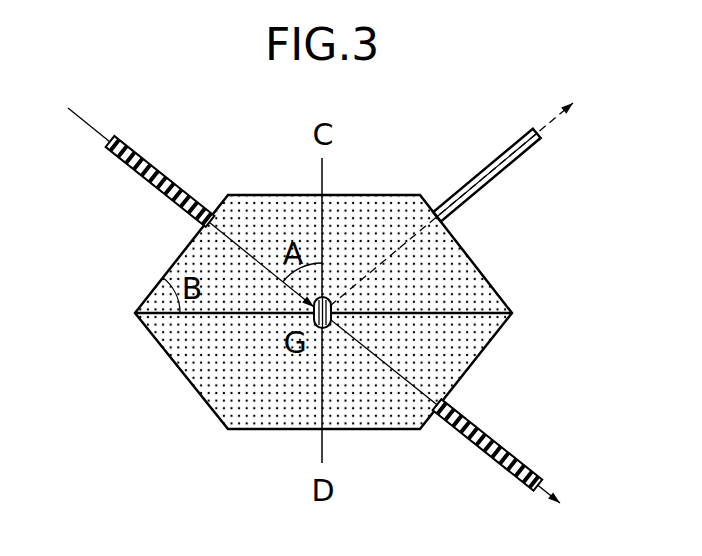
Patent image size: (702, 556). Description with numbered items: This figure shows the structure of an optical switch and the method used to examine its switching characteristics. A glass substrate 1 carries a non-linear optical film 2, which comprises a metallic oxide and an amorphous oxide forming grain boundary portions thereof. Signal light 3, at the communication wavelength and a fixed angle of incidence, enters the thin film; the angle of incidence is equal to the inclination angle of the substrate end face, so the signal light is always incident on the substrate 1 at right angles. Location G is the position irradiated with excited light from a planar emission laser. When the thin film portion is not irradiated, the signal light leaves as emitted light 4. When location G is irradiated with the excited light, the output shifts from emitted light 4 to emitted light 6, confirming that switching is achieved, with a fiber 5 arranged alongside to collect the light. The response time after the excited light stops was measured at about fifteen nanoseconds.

The glass substrate 1 is at (470, 283).
The non-linear optical film 2 is at (198, 322).
The signal light 3 is at (185, 207).
The emitted light 4 is at (453, 411).
The fiber 5 is at (518, 165).
The emitted light 6 is at (451, 191).